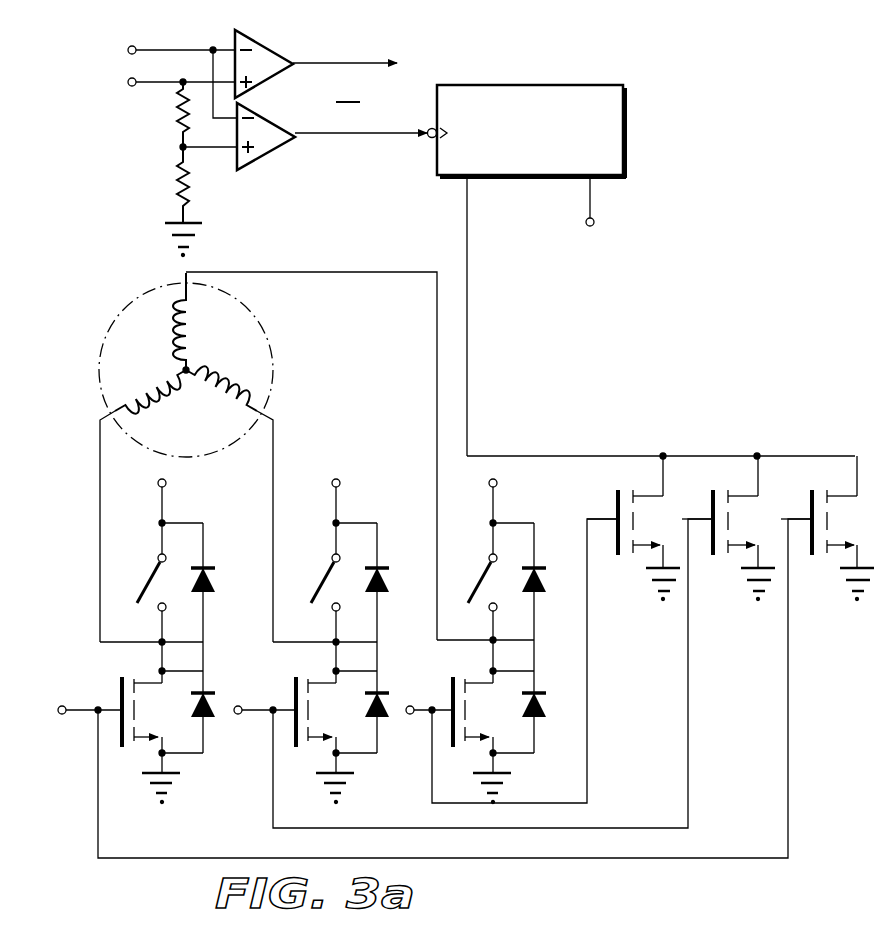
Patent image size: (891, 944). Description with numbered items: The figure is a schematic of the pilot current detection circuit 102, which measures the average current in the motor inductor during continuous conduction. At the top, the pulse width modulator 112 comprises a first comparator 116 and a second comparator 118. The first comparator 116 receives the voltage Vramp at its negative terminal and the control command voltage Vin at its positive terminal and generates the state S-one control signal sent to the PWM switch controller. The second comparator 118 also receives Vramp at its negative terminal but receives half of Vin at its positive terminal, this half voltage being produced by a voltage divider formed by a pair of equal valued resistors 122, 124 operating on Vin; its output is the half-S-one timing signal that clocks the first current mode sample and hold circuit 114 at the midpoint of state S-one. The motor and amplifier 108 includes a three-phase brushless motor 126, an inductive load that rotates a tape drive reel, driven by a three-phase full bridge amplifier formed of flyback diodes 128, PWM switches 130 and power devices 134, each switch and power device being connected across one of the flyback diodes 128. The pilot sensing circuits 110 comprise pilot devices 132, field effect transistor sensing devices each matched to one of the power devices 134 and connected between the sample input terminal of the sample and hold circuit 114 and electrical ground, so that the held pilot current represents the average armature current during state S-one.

The pilot current detection circuit 102 is at (545, 68).
The motor and amplifier 108 is at (146, 272).
The pilot sensing circuits 110 is at (814, 437).
The pulse width modulator (PWM circuit) 112 is at (229, 182).
The first clocked current mode sample and hold circuit 114 is at (627, 124).
The first comparator 116 is at (278, 82).
The second comparator 118 is at (279, 152).
The resistor 122 is at (178, 112).
The resistor 124 is at (172, 180).
The three-phase brushless motor 126 is at (268, 339).
The flyback diodes 128 is at (228, 566).
The PWM switches 130 is at (148, 579).
The pilot devices 132 is at (615, 494).
The power devices 134 is at (118, 692).